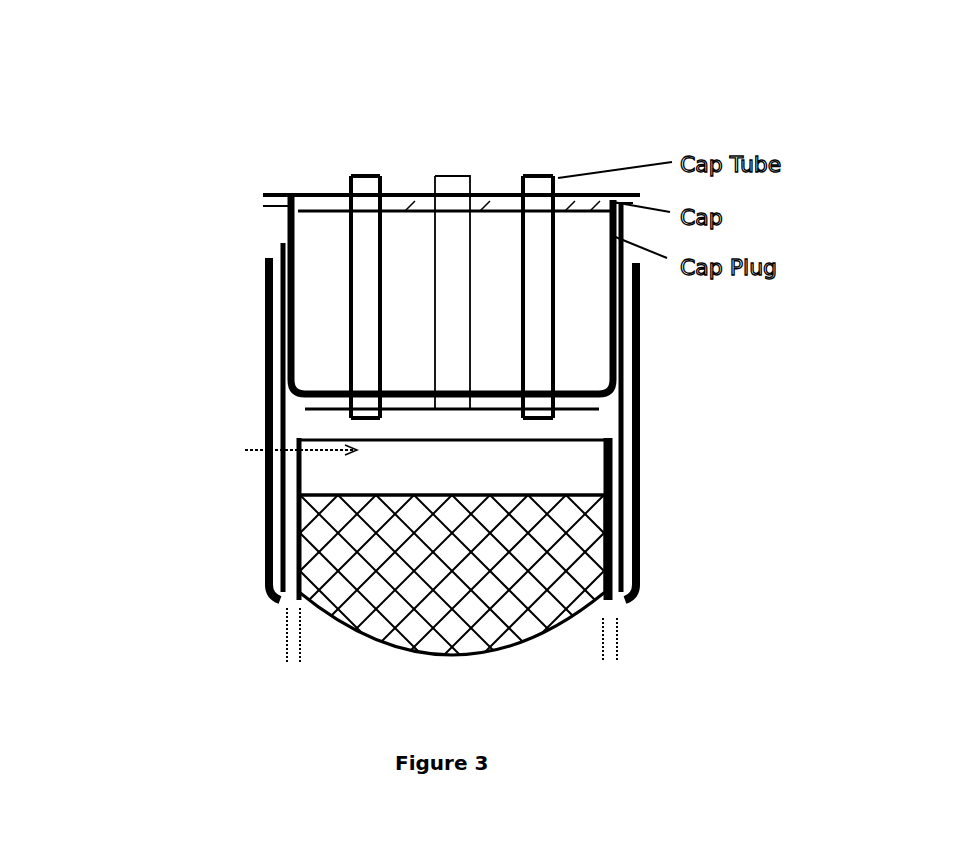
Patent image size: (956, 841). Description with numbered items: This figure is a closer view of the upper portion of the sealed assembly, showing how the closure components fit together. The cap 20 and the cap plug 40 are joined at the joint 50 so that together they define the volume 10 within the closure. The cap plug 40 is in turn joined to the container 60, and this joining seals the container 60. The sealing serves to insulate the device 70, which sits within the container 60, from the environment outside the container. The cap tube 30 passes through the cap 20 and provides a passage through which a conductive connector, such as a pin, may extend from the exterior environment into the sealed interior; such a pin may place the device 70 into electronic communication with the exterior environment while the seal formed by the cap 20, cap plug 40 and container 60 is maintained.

The volume 10 is at (323, 325).
The cap 20 is at (295, 203).
The cap tube 30 is at (372, 178).
The cap plug 40 is at (285, 378).
The joint 50 is at (290, 232).
The container 60 is at (275, 497).
The device 70 is at (560, 575).